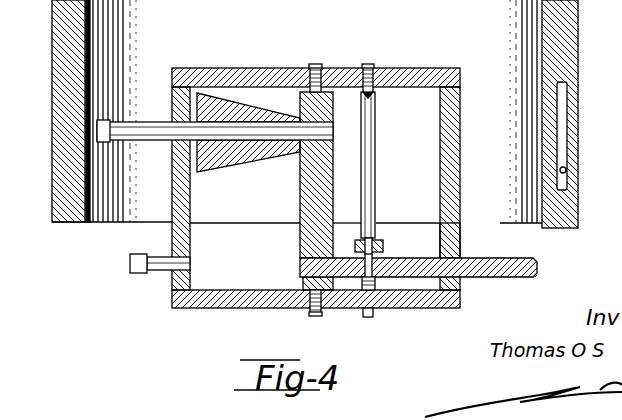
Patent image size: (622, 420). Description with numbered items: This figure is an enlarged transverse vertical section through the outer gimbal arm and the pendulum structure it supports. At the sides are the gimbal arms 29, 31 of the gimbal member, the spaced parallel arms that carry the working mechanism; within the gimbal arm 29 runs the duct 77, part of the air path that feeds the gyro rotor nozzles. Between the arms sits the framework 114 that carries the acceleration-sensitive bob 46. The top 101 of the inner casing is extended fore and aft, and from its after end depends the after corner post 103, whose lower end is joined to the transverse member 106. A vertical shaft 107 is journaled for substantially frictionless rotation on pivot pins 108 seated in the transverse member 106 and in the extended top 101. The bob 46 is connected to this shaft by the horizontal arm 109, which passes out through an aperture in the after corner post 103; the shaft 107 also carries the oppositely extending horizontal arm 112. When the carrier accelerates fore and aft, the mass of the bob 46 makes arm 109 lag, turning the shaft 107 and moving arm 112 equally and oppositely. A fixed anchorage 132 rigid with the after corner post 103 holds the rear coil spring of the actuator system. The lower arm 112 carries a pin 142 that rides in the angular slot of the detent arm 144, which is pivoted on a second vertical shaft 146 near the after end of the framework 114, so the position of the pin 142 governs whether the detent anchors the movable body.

The gimbal arm 29 is at (572, 43).
The gimbal arm 31 is at (60, 40).
The bob 46 is at (243, 157).
The duct 77 is at (568, 172).
The top of inner casing 101 is at (231, 72).
The after corner post 103 is at (446, 258).
The transverse member 106 is at (210, 309).
The vertical shaft 107 is at (308, 198).
The pivot pins 108 is at (315, 93).
The horizontal arm 109 is at (152, 124).
The horizontal arm 112 is at (483, 277).
The framework 114 is at (463, 157).
The fixed anchorage 132 is at (130, 261).
The pin 142 is at (375, 240).
The detent arm 144 is at (384, 246).
The second vertical shaft 146 is at (375, 174).